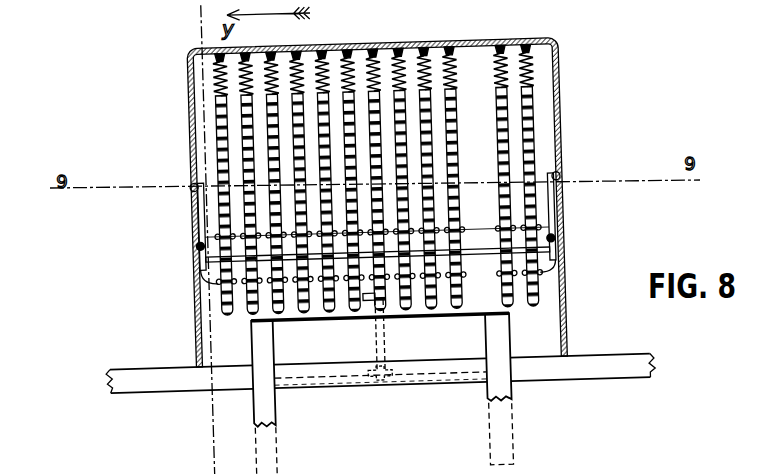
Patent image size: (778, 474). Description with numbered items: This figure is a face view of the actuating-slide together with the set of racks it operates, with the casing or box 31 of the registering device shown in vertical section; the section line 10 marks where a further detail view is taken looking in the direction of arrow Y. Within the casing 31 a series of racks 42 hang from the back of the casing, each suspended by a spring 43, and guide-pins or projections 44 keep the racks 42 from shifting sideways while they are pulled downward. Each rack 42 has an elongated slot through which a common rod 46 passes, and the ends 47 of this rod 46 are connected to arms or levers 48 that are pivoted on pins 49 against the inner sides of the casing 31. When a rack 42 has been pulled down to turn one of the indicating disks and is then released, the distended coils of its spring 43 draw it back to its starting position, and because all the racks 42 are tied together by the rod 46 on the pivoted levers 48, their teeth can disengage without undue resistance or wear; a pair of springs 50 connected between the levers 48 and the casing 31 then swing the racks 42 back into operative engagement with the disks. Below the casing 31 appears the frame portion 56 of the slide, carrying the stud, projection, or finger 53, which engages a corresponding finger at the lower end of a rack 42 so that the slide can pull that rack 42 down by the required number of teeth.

The base rail 10 is at (382, 413).
The casing or box 31 is at (418, 44).
The racks 42 is at (247, 108).
The springs 43 is at (363, 57).
The guide-pins or projections 44 is at (216, 279).
The rod 46 is at (476, 256).
The ends of rod 47 is at (198, 278).
The arms or levers 48 is at (201, 203).
The pins 49 is at (191, 180).
The springs 50 is at (199, 241).
The stud, projection, or finger 53 is at (371, 300).
The frame portion 56 is at (316, 311).